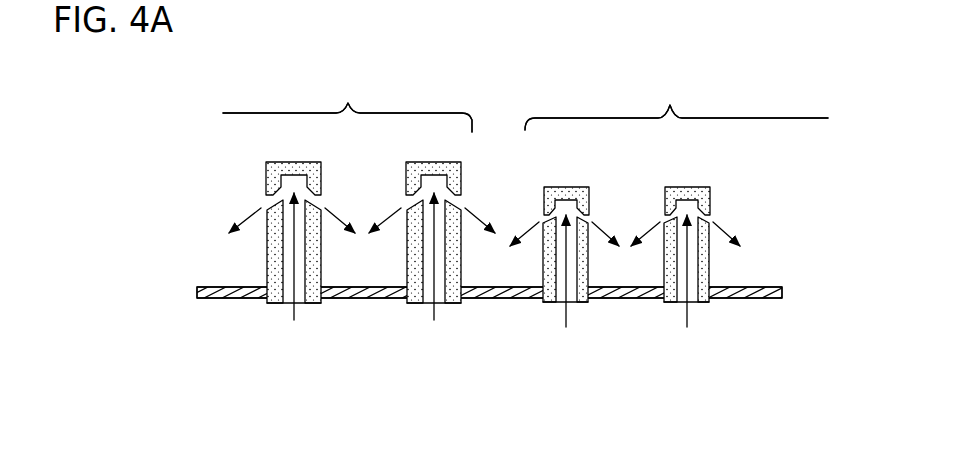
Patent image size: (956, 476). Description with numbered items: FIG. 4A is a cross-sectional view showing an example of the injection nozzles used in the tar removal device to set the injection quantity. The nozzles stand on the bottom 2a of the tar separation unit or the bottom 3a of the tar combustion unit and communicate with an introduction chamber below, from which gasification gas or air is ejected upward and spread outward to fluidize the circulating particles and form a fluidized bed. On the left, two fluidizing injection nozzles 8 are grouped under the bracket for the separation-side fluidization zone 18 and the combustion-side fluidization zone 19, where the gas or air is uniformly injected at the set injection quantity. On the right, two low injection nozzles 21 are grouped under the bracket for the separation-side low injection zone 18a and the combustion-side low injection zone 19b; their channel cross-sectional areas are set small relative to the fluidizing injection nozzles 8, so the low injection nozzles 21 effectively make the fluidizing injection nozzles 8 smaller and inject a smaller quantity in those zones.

The bottom of tar separation unit 2a is at (213, 288).
The bottom of tar combustion unit 3a is at (213, 288).
The fluidizing injection nozzle 8 is at (266, 268).
The separation-side fluidization zone 18 is at (345, 77).
The combustion-side fluidization zone 19 is at (408, 77).
The separation-side low injection zone 18a is at (658, 90).
The combustion-side low injection zone 19b is at (746, 90).
The low injection nozzle 21 is at (590, 267).